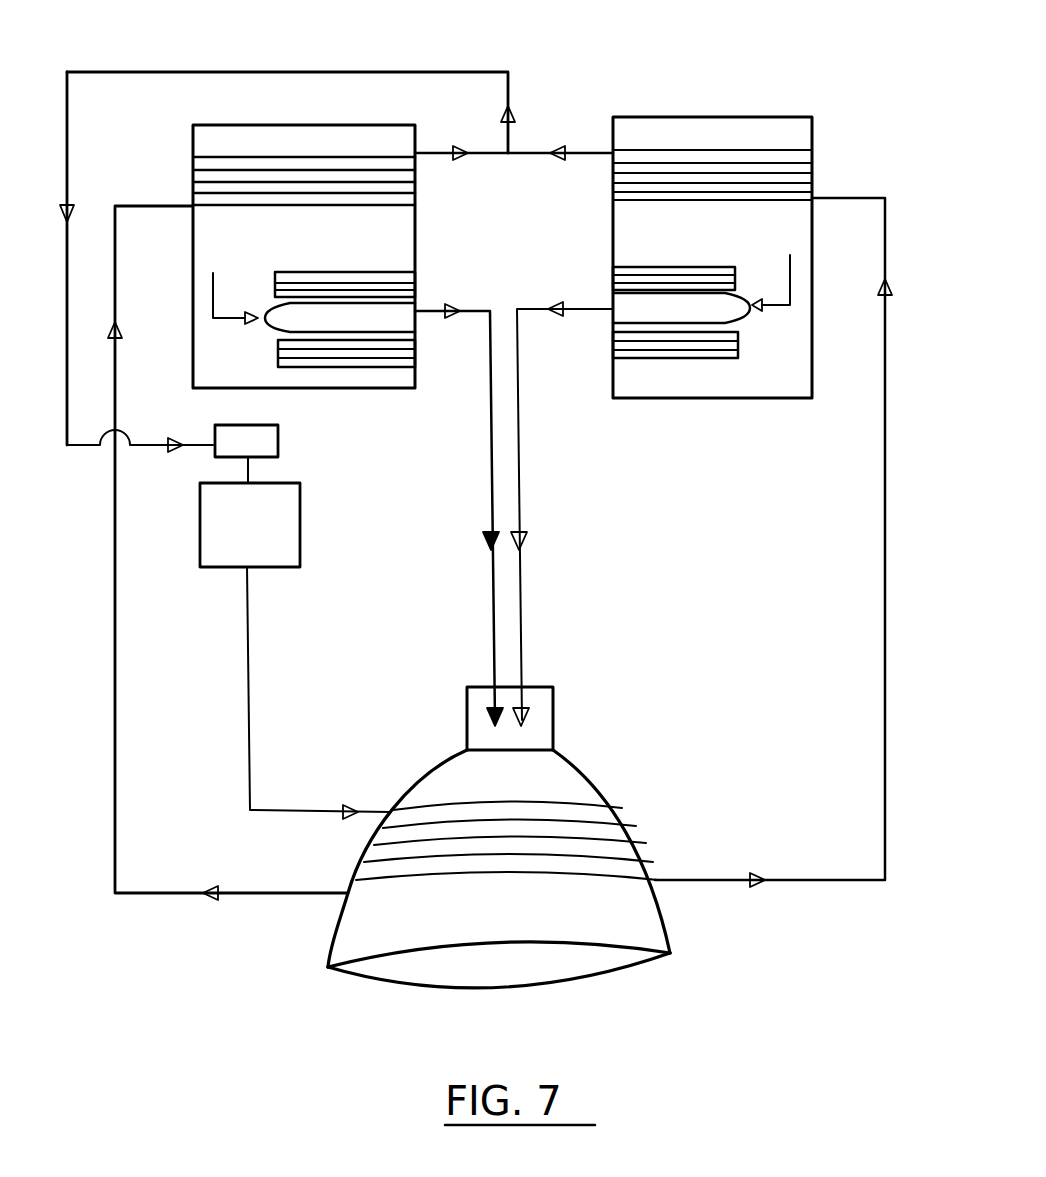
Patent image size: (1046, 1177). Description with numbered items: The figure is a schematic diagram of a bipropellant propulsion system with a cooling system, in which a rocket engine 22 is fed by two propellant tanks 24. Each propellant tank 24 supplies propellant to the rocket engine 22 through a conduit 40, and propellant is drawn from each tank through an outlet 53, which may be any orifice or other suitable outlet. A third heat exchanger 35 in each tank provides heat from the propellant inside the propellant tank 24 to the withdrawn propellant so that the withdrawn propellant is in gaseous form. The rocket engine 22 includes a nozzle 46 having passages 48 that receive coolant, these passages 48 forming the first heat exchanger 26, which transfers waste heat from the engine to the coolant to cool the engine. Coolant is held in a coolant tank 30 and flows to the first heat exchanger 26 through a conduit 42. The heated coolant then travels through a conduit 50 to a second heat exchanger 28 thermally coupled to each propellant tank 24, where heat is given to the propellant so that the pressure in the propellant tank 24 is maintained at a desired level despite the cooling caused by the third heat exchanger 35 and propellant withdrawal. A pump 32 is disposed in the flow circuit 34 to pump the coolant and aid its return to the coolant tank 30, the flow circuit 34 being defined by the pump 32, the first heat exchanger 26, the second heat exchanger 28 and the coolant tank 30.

The rocket engine 22 is at (478, 869).
The propellant tank 24 is at (258, 124).
The first heat exchanger 26 is at (385, 878).
The second heat exchanger 28 is at (357, 165).
The coolant tank 30 is at (282, 530).
The pump 32 is at (280, 435).
The flow circuit 34 is at (341, 70).
The third heat exchanger 35 is at (305, 285).
The conduit 40 is at (490, 578).
The conduit 42 is at (250, 712).
The nozzle 46 is at (355, 938).
The passages 48 is at (612, 840).
The conduit 50 is at (115, 660).
The outlet 53 is at (292, 312).